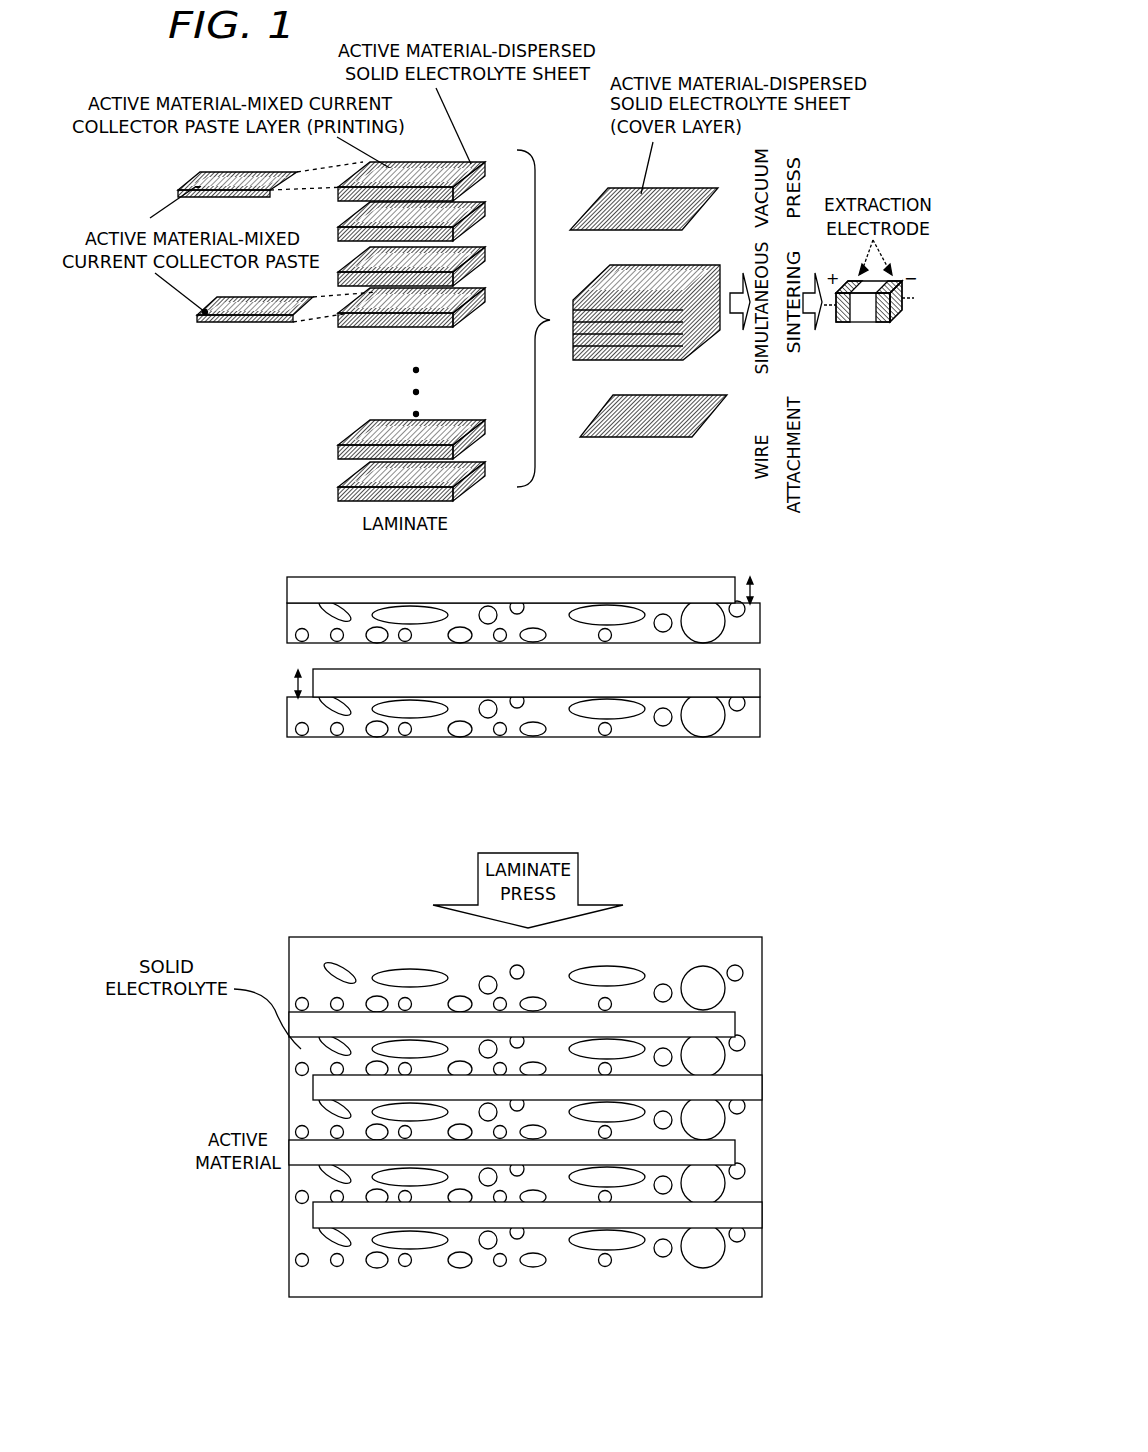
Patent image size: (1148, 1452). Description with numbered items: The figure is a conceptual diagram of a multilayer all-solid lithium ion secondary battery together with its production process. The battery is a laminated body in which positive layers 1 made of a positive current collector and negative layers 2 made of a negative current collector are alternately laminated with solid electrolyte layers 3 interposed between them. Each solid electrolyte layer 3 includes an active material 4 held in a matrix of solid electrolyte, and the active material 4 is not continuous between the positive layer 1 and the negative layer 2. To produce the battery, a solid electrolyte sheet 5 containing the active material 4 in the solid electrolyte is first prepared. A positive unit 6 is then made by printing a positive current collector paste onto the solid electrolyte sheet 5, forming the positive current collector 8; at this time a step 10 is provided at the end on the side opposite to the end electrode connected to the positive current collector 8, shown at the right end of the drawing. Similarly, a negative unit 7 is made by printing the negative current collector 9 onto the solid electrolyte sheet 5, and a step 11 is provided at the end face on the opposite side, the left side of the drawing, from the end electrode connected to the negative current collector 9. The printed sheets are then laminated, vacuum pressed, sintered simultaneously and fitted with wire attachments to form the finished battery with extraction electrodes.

The positive layer 1 is at (737, 1015).
The negative layer 2 is at (755, 1088).
The solid electrolyte layer 3 is at (750, 952).
The active material 4 is at (301, 1076).
The solid electrolyte sheet 5 is at (290, 625).
The positive unit 6 is at (785, 630).
The negative unit 7 is at (788, 690).
The positive current collector 8 is at (705, 598).
The negative current collector 9 is at (322, 682).
The step 10 is at (815, 583).
The step 11 is at (296, 690).